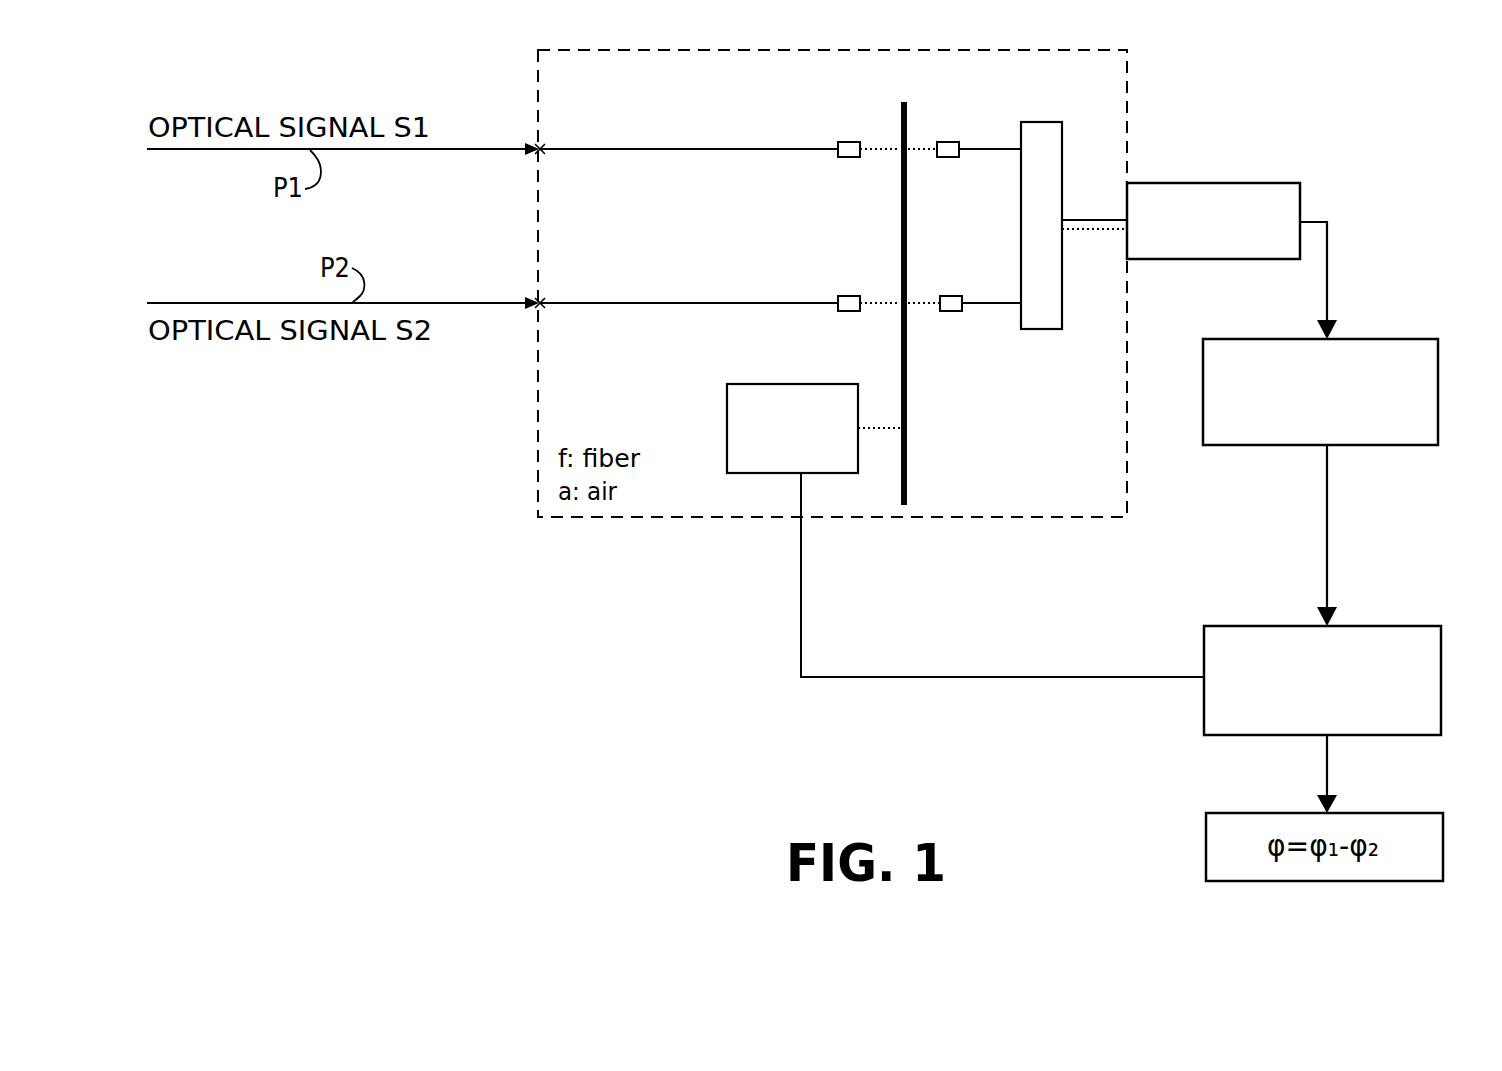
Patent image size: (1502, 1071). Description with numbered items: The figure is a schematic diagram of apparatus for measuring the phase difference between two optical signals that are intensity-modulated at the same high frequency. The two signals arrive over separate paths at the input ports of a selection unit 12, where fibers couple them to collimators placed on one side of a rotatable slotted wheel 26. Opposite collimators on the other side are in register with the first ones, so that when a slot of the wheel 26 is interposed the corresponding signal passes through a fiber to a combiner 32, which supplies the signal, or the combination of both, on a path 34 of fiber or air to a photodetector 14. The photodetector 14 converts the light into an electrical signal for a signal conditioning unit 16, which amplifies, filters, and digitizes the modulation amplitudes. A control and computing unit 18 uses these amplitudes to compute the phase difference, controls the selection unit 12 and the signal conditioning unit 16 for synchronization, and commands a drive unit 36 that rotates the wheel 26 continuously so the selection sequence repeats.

The selection unit 12 is at (1095, 50).
The photodetector 14 is at (1190, 260).
The signal conditioning unit 16 is at (1438, 362).
The control and computing unit 18 is at (1441, 650).
The rotatable slotted wheel 26 is at (908, 445).
The combiner 32 is at (1063, 281).
The path 34 is at (1098, 221).
The drive unit 36 is at (727, 411).